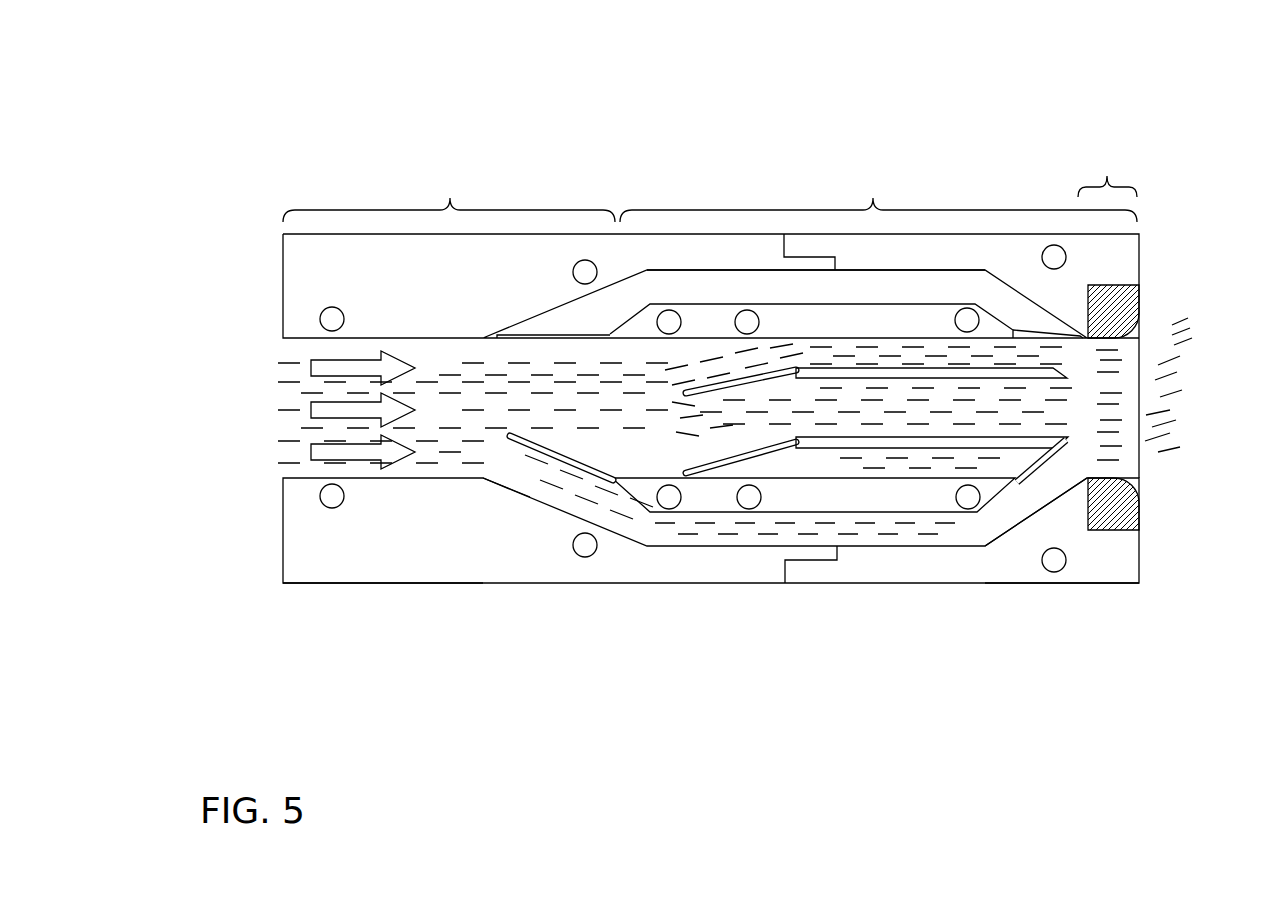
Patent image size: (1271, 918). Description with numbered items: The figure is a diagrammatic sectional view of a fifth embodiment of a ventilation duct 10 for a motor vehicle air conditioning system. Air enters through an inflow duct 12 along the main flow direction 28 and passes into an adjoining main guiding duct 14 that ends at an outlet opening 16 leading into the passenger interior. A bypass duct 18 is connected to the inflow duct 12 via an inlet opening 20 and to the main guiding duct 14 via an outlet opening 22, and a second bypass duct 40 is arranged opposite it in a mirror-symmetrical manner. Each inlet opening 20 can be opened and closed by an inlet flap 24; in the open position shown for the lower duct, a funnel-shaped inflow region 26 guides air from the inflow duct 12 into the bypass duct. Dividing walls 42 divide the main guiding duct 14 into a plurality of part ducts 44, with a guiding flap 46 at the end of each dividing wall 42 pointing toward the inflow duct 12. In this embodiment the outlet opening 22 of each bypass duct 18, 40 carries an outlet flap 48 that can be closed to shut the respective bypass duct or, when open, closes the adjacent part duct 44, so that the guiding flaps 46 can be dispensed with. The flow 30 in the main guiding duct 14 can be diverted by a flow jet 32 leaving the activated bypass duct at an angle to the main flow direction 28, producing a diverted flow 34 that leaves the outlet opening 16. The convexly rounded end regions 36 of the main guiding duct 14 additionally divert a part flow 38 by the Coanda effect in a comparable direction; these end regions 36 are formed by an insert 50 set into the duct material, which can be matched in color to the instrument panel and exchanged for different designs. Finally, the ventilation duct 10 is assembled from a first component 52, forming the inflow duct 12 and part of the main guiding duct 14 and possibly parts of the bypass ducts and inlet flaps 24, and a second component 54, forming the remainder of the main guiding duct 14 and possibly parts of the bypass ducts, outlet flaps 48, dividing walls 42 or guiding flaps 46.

The ventilation duct 10 is at (296, 142).
The inflow duct 12 is at (449, 190).
The main guiding duct 14 is at (878, 196).
The outlet opening 16 is at (1140, 405).
The bypass duct 18 is at (757, 290).
The inlet opening 20 is at (598, 506).
The outlet opening 22 is at (1040, 488).
The inlet flap 24 is at (528, 442).
The inflow region 26 is at (523, 477).
The main flow direction 28 is at (320, 368).
The flow 30 is at (878, 400).
The flow jet 32 is at (996, 516).
The diverted flow 34 is at (1180, 382).
The end region 36 is at (1107, 168).
The part flow 38 is at (1145, 335).
The second bypass duct 40 is at (690, 532).
The dividing wall 42 is at (817, 370).
The part duct 44 is at (948, 350).
The guiding flap 46 is at (707, 388).
The outlet flap 48 is at (1023, 332).
The insert 50 is at (1124, 507).
The first component 52 is at (428, 561).
The second component 54 is at (999, 557).